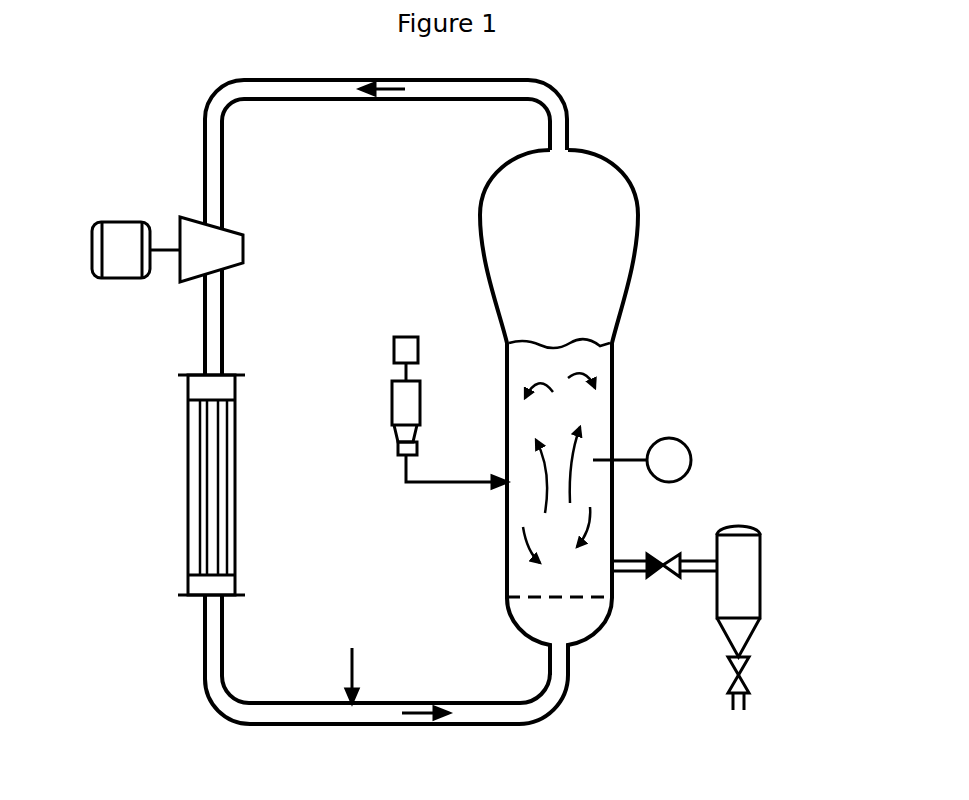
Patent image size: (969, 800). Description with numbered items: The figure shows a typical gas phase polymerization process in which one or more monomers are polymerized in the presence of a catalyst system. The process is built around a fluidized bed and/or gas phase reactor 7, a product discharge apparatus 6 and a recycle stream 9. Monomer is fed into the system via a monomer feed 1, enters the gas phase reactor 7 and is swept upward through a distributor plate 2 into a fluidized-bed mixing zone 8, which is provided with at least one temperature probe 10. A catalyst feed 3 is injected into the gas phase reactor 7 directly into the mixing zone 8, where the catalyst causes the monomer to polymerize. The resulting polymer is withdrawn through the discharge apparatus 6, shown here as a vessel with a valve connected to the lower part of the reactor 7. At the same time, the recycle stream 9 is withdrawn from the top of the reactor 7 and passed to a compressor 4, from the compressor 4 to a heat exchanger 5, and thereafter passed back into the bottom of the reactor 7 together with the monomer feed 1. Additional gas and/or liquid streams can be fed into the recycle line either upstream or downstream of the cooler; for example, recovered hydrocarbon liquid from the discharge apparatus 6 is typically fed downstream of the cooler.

The monomer feed 1 is at (358, 667).
The distributor plate 2 is at (590, 598).
The catalyst feed 3 is at (388, 436).
The compressor 4 is at (250, 249).
The heat exchanger 5 is at (180, 483).
The product discharge apparatus 6 is at (767, 567).
The gas phase reactor 7 is at (633, 263).
The fluidized-bed mixing zone 8 is at (613, 368).
The recycle stream 9 is at (568, 107).
The temperature probe 10 is at (702, 458).